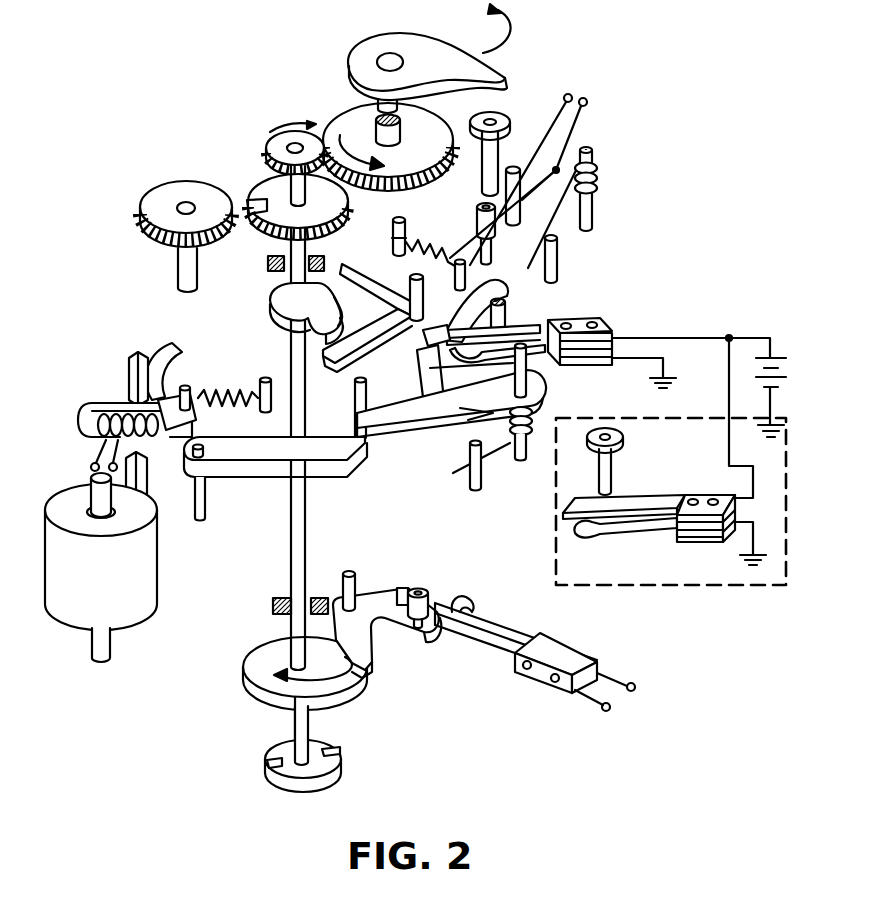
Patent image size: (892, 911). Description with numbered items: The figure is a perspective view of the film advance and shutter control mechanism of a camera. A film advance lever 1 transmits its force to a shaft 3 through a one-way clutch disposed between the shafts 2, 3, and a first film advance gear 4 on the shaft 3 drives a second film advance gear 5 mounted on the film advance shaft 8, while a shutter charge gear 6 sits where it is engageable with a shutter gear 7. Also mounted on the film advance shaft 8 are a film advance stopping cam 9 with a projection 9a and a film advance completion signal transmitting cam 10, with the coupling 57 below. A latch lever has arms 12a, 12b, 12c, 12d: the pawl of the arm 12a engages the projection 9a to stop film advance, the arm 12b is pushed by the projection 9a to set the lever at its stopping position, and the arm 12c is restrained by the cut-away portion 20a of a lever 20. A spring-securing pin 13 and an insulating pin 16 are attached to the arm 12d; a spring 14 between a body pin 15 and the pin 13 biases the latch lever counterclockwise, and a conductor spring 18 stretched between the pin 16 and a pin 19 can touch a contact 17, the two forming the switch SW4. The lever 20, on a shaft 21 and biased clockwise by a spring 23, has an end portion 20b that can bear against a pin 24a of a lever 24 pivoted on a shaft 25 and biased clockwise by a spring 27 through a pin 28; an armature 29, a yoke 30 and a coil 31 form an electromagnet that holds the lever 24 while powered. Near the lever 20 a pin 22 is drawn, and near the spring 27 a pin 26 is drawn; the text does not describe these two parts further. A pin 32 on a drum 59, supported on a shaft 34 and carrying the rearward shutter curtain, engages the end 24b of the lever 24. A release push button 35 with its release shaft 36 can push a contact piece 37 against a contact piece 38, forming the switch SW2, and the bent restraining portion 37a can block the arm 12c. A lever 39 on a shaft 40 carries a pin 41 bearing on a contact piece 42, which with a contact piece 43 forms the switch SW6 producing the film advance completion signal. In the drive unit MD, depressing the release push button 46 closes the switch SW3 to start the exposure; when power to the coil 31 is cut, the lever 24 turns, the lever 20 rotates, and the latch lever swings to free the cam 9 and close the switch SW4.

The film advance lever 1 is at (432, 48).
The shaft 2 is at (378, 105).
The shaft 3 is at (400, 136).
The first film advance gear 4 is at (436, 132).
The second film advance gear 5 is at (274, 145).
The shutter charge gear 6 is at (262, 196).
The shutter gear 7 is at (156, 204).
The film advance shaft 8 is at (291, 279).
The film advance stopping cam 9 is at (271, 313).
The projection 9a is at (336, 315).
The film advance completion signal transmitting cam 10 is at (257, 650).
The arm 12a is at (326, 355).
The arm 12b is at (343, 264).
The arm 12c is at (426, 393).
The arm 12d is at (462, 258).
The spring-securing pin 13 is at (497, 290).
The spring 14 is at (410, 275).
The pin 15 is at (393, 224).
The insulating pin 16 is at (480, 210).
The contact 17 is at (516, 183).
The conductor spring 18 is at (528, 186).
The pin 19 is at (557, 259).
The lever 20 is at (420, 410).
The cut-away portion 20a is at (448, 402).
The end portion 20b is at (373, 428).
The shaft 21 is at (534, 392).
The pin 22 is at (470, 478).
The spring 23 is at (521, 456).
The lever 24 is at (325, 466).
The pin 24a is at (355, 392).
The one end 24b is at (158, 355).
The shaft 25 is at (206, 494).
The pin 26 is at (265, 377).
The spring 27 is at (224, 399).
The pin 28 is at (186, 385).
The armature 29 is at (175, 426).
The yoke 30 is at (112, 405).
The coil 31 is at (104, 440).
The pin 32 is at (128, 370).
The shaft 34 is at (111, 652).
The release push button 35 is at (505, 115).
The release shaft 36 is at (507, 305).
The contact piece 37 is at (492, 341).
The restraining portion 37a is at (422, 344).
The contact piece 38 is at (548, 366).
The lever 39 is at (372, 655).
The shaft 40 is at (349, 570).
The pin 41 is at (418, 588).
The contact piece 42 is at (490, 630).
The contact piece 43 is at (496, 615).
The release push button 46 is at (618, 446).
The coupling 57 is at (272, 750).
The drum 59 is at (152, 524).
The switch SW2 is at (618, 320).
The switch SW3 is at (717, 546).
The switch SW4 is at (544, 178).
The switch SW6 is at (597, 658).
The motor drive circuit MD is at (718, 588).